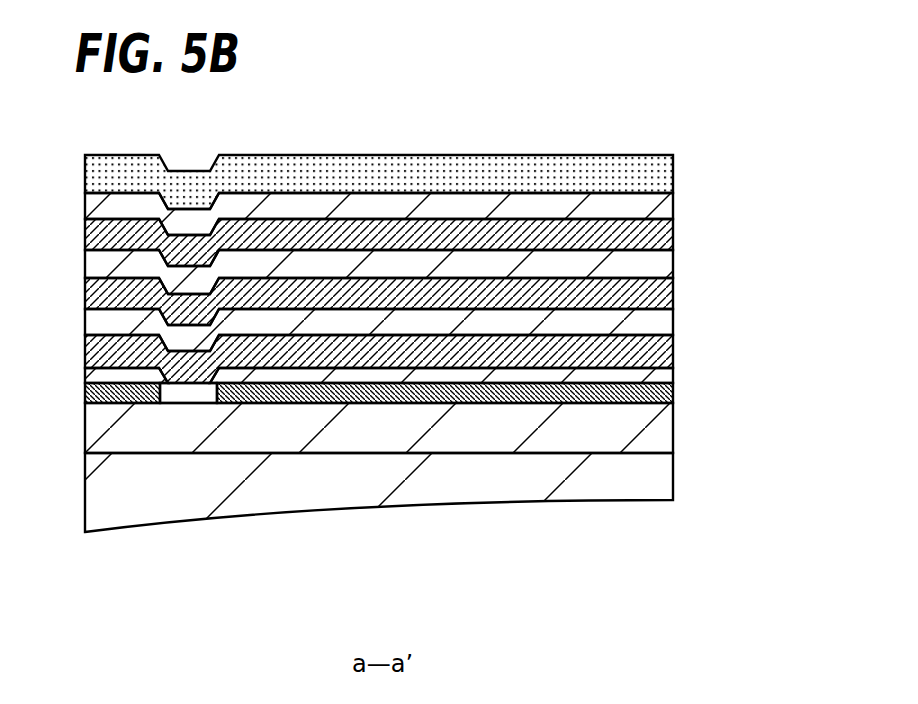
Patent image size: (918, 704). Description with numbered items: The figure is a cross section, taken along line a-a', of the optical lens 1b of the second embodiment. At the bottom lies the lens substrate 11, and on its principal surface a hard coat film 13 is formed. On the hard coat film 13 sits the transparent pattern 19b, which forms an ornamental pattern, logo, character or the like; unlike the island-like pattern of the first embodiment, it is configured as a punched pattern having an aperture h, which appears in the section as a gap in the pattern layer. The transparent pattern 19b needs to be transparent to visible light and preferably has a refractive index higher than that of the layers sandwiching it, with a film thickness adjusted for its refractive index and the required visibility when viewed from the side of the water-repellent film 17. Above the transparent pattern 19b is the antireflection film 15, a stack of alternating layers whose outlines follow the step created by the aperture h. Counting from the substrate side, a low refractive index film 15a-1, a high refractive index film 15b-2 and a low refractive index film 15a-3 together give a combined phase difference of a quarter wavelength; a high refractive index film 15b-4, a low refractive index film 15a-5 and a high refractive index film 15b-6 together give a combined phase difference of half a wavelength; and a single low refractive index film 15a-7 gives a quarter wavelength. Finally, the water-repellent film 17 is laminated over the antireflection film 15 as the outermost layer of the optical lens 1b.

The optical lens 1b is at (441, 104).
The water-repellent film 17 is at (567, 177).
The antireflection film 15 is at (80, 383).
The low refractive index film 15a-7 is at (661, 208).
The high refractive index film 15b-6 is at (667, 237).
The low refractive index film 15a-5 is at (661, 268).
The high refractive index film 15b-4 is at (662, 302).
The low refractive index film 15a-3 is at (662, 322).
The high refractive index film 15b-2 is at (664, 351).
The low refractive index film 15a-1 is at (662, 375).
The transparent pattern 19b is at (107, 390).
The aperture h is at (192, 390).
The hard coat film 13 is at (660, 433).
The lens substrate 11 is at (660, 471).